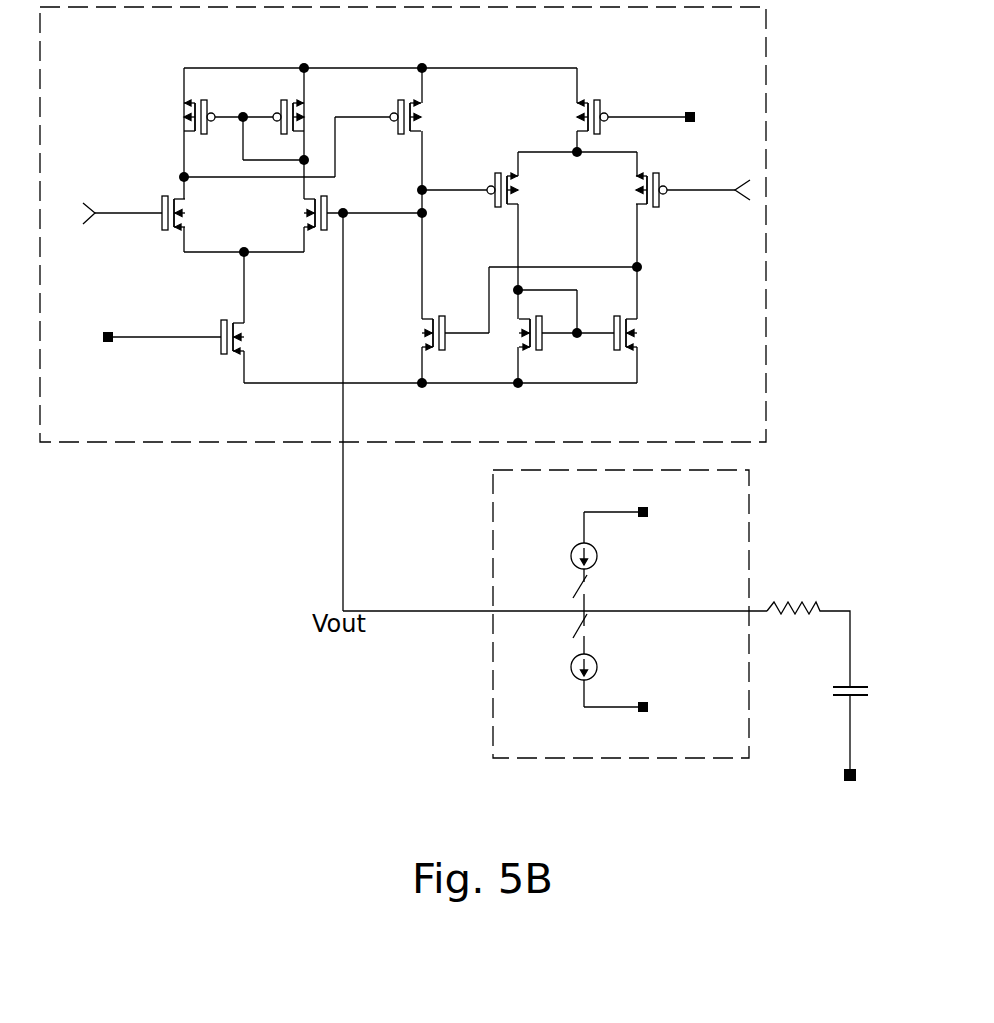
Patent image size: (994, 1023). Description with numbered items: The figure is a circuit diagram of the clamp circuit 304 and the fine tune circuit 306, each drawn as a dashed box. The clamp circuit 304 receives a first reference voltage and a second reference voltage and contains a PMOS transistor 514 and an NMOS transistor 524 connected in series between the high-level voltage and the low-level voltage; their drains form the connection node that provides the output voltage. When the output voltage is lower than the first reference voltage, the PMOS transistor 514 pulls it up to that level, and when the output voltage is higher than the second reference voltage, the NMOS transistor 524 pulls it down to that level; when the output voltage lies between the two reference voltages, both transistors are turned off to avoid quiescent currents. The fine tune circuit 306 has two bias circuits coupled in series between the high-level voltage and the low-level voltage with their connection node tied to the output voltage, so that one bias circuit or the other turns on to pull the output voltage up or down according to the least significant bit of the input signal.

The clamp circuit 304 is at (403, 260).
The fine tune circuit 306 is at (513, 686).
The PMOS transistor 514 is at (424, 106).
The NMOS transistor 524 is at (428, 332).